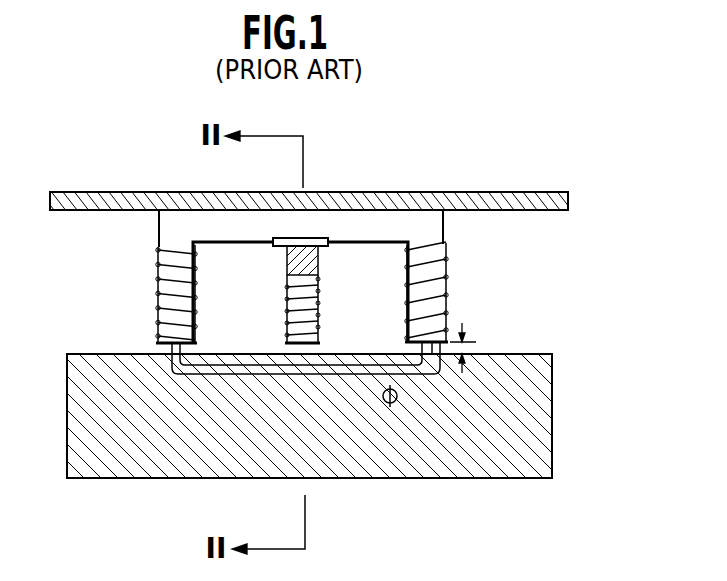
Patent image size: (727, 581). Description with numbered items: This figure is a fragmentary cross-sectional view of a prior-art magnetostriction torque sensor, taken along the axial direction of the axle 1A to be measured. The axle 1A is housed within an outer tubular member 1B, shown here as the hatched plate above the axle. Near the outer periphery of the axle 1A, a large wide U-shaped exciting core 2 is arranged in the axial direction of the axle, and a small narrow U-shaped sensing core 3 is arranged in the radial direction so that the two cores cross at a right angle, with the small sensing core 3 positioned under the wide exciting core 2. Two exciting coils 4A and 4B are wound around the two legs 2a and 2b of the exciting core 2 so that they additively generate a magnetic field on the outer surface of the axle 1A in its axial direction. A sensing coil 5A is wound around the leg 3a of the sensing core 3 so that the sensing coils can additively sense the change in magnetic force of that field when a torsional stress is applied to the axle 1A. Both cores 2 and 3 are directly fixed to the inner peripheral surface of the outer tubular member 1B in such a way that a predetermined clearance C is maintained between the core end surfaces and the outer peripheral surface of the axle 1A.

The axle 1A is at (528, 354).
The outer tubular member 1B is at (533, 192).
The exciting core 2 is at (367, 218).
The leg of exciting core 2a is at (441, 287).
The leg of exciting core 2b is at (171, 292).
The sensing core 3 is at (285, 258).
The leg of sensing core 3a is at (305, 309).
The exciting coil 4A is at (431, 247).
The exciting coil 4B is at (178, 252).
The sensing coil 5A is at (318, 281).
The clearance C is at (463, 336).